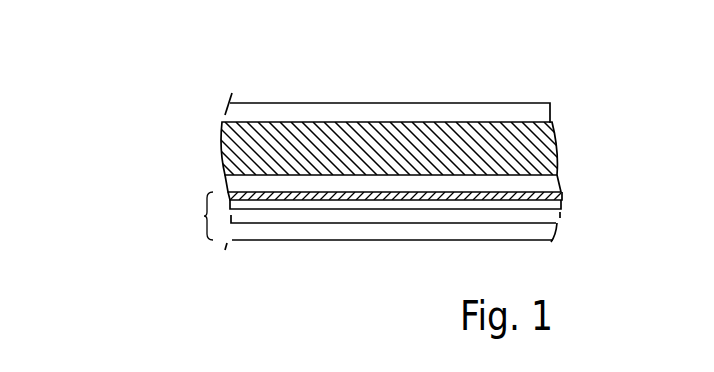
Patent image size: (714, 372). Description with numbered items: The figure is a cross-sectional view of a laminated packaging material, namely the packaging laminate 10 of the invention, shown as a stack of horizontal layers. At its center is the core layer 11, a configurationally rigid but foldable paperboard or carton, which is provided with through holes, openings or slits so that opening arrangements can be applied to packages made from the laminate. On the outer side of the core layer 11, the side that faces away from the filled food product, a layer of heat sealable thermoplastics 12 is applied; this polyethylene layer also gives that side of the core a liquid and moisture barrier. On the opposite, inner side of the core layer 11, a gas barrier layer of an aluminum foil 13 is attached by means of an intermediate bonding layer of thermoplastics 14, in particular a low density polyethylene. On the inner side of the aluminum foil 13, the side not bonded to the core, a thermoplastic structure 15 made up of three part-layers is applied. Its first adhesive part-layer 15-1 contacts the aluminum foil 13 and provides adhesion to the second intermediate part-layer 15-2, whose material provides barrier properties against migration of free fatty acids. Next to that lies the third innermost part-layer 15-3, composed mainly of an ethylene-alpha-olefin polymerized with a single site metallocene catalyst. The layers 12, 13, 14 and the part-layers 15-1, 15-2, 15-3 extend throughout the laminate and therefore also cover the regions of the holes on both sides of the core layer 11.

The packaging laminate 10 is at (81, 165).
The core layer 11 is at (534, 148).
The layer of heat sealable thermoplastics 12 is at (532, 113).
The aluminum foil 13 is at (545, 197).
The intermediate bonding layer of thermoplastics 14 is at (531, 182).
The thermoplastic structure 15 is at (419, 253).
The first adhesive part-layer 15-1 is at (540, 205).
The second intermediate part-layer 15-2 is at (532, 217).
The third innermost part-layer 15-3 is at (515, 233).